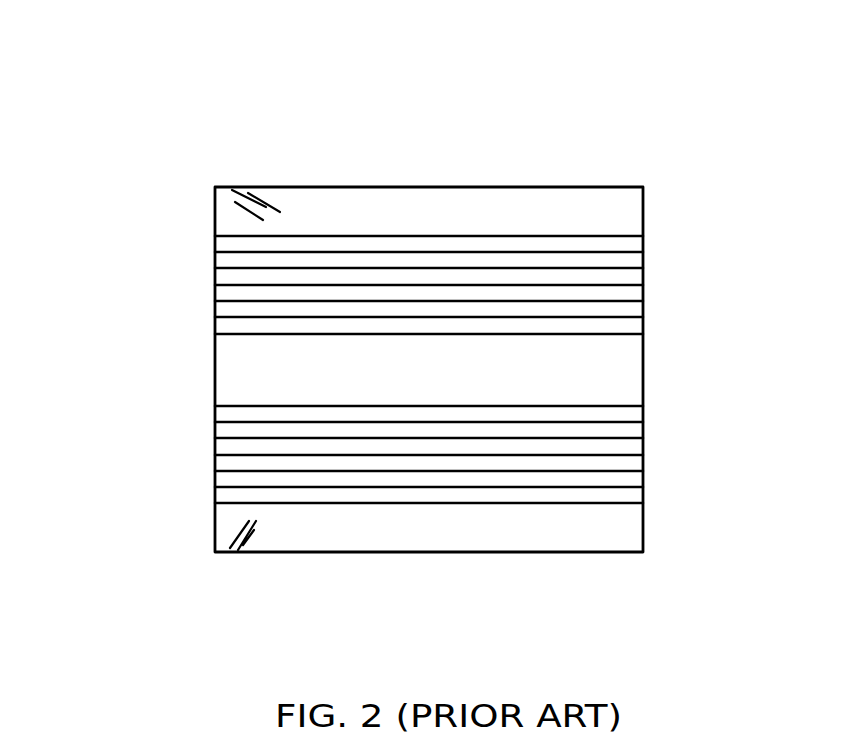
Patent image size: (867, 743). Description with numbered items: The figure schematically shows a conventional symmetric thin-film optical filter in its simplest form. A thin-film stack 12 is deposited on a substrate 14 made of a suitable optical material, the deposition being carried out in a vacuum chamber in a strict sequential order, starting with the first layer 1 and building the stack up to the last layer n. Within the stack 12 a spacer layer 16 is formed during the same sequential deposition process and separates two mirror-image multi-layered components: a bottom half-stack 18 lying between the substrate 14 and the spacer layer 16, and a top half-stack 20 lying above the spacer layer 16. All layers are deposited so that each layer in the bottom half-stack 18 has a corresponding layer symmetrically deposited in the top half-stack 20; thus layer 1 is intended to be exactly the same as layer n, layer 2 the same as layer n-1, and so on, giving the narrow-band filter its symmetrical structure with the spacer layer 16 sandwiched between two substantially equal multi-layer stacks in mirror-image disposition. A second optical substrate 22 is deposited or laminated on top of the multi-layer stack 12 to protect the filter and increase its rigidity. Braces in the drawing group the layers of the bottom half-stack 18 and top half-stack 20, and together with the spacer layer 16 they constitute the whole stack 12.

The thin-film stack 12 is at (105, 232).
The substrate 14 is at (630, 538).
The spacer layer 16 is at (630, 375).
The bottom half-stack 18 is at (200, 505).
The top half-stack 20 is at (200, 328).
The second optical substrate 22 is at (582, 220).
The first layer 1 is at (630, 498).
The second layer 2 is at (630, 475).
The last layer n is at (630, 246).
The layer n−1 n-1 is at (630, 262).